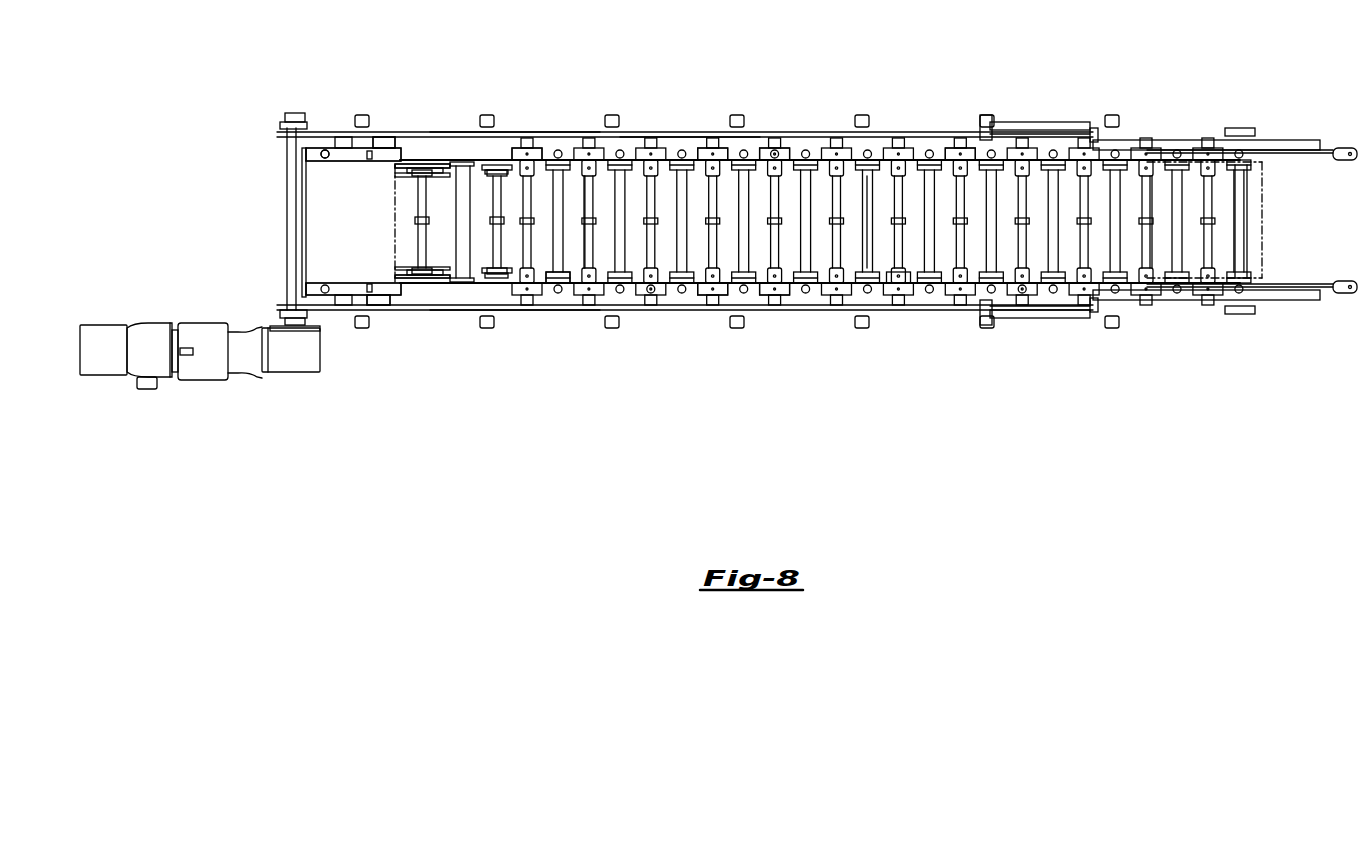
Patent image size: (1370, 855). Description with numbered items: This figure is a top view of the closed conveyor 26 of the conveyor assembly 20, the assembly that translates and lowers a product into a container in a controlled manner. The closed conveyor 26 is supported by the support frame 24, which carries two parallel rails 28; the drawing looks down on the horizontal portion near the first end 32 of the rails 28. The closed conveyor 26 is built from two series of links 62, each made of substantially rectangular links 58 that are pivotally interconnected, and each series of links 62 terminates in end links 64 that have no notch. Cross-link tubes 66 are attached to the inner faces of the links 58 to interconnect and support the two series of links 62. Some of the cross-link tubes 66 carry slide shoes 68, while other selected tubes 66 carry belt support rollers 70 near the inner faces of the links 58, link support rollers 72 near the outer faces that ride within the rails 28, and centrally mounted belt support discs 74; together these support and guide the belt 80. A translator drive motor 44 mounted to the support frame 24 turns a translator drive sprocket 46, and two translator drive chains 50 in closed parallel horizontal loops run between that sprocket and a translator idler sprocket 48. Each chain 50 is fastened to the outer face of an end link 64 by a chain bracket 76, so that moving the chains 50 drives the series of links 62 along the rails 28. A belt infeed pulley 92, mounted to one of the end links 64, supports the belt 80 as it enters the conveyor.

The conveyor assembly 20 is at (525, 432).
The support frame 24 is at (688, 130).
The closed conveyor 26 is at (543, 146).
The rails 28 is at (811, 140).
The first end 32 is at (325, 150).
The translator drive motor 44 is at (207, 366).
The translator drive sprocket 46 is at (284, 137).
The translator idler sprocket 48 is at (1075, 130).
The translator drive chains 50 is at (508, 136).
The links 58 is at (938, 146).
The series of links 62 is at (635, 134).
The end links 64 is at (344, 148).
The cross-link tubes 66 is at (871, 188).
The slide shoes 68 is at (550, 292).
The belt support rollers 70 is at (722, 158).
The link support rollers 72 is at (777, 142).
The belt support discs 74 is at (586, 224).
The chain bracket 76 is at (388, 140).
The belt 80 is at (404, 183).
The belt infeed pulley 92 is at (404, 186).